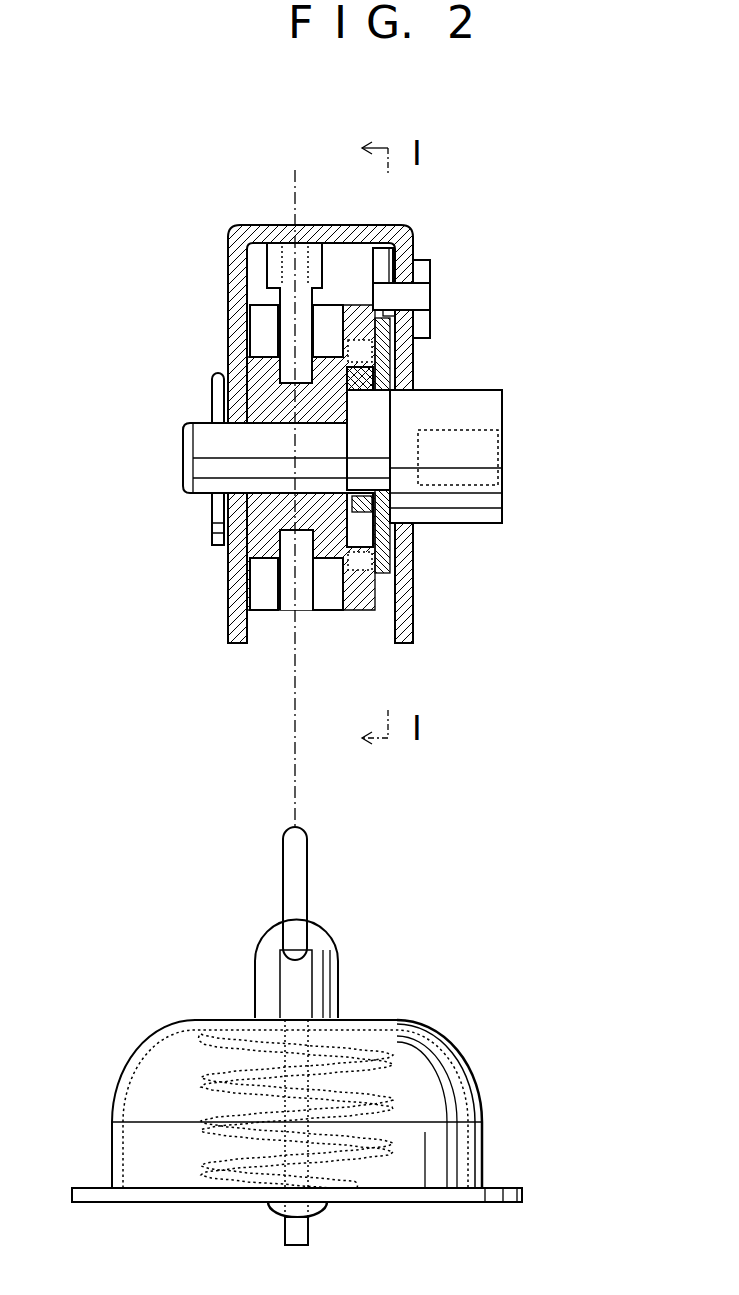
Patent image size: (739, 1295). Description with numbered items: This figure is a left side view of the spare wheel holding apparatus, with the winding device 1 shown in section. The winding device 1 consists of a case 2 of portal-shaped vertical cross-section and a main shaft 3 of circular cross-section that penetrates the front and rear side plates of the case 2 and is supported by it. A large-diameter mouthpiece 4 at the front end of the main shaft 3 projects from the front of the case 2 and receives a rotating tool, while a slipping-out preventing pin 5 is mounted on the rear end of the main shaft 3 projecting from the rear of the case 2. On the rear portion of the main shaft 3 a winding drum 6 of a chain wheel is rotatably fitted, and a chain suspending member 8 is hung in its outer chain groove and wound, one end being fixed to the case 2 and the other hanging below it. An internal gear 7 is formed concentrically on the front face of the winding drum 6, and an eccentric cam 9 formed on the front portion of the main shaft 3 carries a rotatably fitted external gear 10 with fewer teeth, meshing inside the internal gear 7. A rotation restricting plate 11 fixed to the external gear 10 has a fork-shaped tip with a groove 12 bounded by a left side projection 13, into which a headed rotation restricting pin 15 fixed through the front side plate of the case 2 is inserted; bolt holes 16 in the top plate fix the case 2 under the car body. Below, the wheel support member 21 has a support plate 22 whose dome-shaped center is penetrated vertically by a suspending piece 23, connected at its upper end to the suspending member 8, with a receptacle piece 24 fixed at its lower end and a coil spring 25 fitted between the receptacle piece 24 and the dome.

The winding device 1 is at (195, 335).
The case 2 is at (228, 272).
The main shaft 3 is at (183, 458).
The mouthpiece 4 is at (503, 412).
The slipping-out preventing pin 5 is at (212, 385).
The winding drum 6 is at (262, 552).
The internal gear 7 is at (377, 585).
The suspending member 8 is at (295, 795).
The eccentric cam 9 is at (368, 412).
The external gear 10 is at (372, 383).
The rotation restricting plate 11 is at (385, 552).
The groove 12 is at (395, 310).
The left side projection 13 is at (378, 258).
The rotation restricting pin 15 is at (383, 293).
The bolt holes 16 is at (301, 489).
The wheel support member 21 is at (135, 1043).
The support plate 22 is at (522, 1195).
The suspending piece 23 is at (307, 975).
The receptacle piece 24 is at (393, 1182).
The coil spring 25 is at (393, 1052).